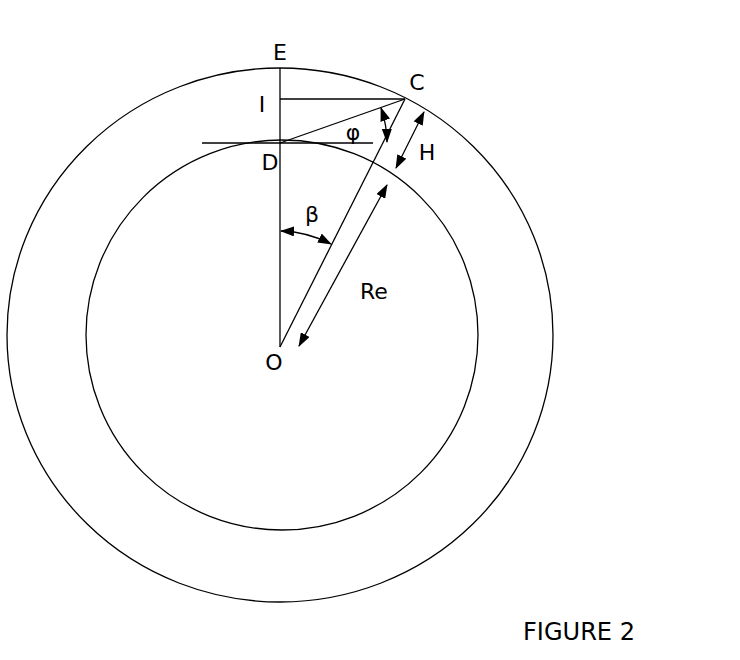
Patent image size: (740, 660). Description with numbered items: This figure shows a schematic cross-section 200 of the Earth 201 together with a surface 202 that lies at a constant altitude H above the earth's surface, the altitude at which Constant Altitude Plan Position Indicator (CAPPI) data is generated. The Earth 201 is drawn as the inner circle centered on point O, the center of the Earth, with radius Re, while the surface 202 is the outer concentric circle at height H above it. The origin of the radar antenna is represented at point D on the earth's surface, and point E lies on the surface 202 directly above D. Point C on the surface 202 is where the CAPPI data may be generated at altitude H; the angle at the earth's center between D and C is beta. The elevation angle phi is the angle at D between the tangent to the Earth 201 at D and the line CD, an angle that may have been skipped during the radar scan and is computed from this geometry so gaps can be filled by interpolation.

The schematic cross-section 200 is at (339, 322).
The surface 202 is at (521, 199).
The Earth 201 is at (481, 336).